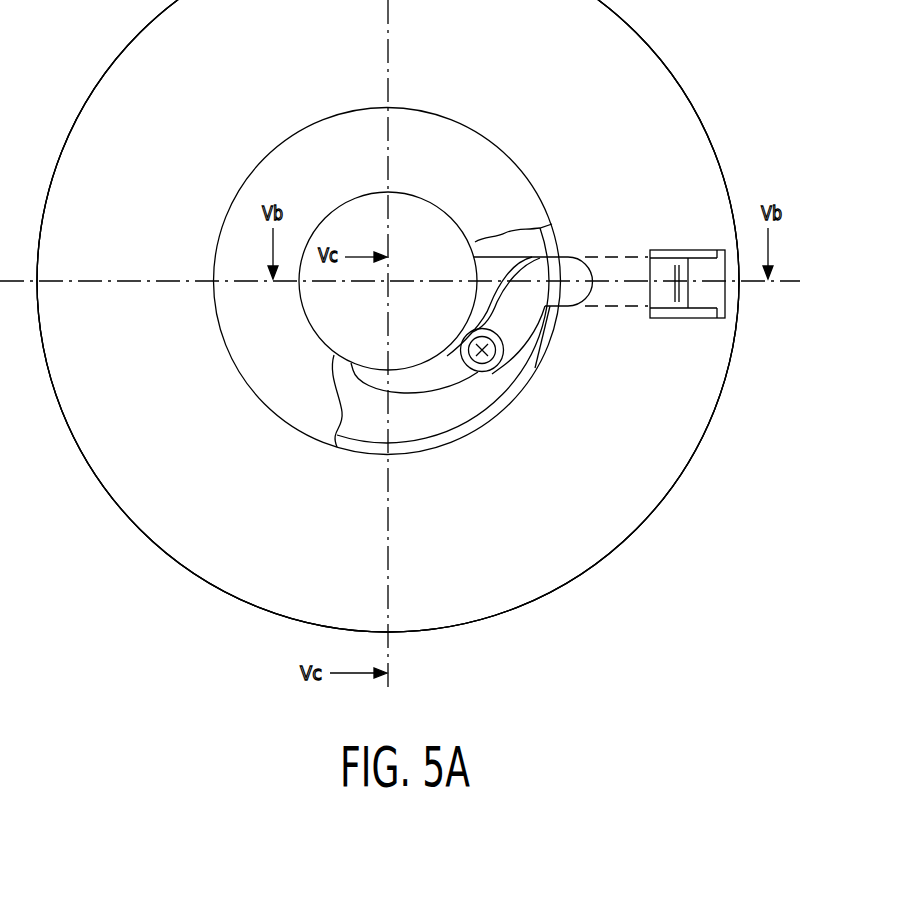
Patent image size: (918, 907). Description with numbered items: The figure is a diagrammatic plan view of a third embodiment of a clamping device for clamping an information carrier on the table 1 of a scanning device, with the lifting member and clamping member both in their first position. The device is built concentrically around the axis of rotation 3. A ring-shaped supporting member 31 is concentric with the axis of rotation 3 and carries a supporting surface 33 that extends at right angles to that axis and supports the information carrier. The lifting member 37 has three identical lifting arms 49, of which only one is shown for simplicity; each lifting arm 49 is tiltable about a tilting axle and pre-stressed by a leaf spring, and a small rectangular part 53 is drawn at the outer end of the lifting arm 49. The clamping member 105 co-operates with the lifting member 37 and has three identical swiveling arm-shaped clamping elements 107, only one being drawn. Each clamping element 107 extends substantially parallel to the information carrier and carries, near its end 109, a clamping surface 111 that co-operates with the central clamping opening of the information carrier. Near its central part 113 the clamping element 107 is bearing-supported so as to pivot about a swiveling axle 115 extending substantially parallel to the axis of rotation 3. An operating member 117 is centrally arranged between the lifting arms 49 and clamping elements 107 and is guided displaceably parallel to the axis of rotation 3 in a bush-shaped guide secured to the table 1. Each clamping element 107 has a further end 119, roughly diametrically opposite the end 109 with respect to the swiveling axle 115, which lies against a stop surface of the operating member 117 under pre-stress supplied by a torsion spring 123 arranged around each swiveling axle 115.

The table 1 is at (690, 457).
The axis of rotation 3 is at (391, 279).
The ring-shaped supporting member 31 is at (702, 405).
The supporting surface 33 is at (388, 316).
The lifting member 37 is at (628, 205).
The lifting arm 49 is at (608, 306).
The bolt 53 is at (663, 267).
The clamping member 105 is at (490, 318).
The clamping element 107 is at (523, 331).
The end 109 is at (532, 270).
The clamping surface 111 is at (560, 340).
The central part 113 is at (442, 380).
The swiveling axle 115 is at (510, 383).
The operating member 117 is at (417, 211).
The further end 119 is at (375, 382).
The torsion spring 123 is at (527, 370).